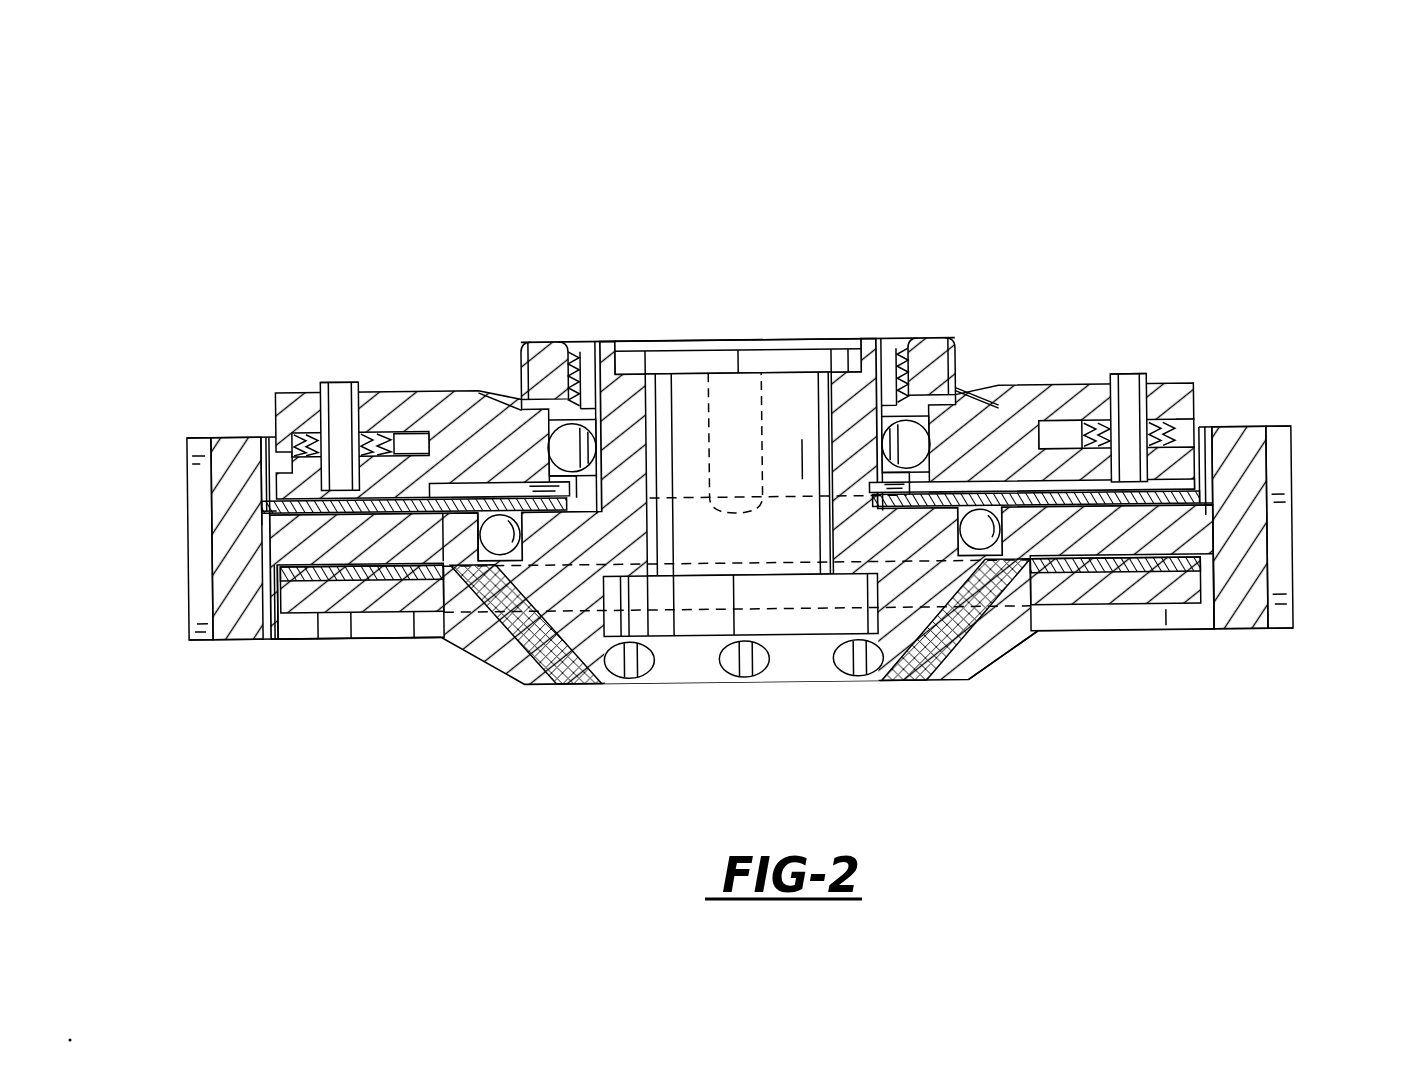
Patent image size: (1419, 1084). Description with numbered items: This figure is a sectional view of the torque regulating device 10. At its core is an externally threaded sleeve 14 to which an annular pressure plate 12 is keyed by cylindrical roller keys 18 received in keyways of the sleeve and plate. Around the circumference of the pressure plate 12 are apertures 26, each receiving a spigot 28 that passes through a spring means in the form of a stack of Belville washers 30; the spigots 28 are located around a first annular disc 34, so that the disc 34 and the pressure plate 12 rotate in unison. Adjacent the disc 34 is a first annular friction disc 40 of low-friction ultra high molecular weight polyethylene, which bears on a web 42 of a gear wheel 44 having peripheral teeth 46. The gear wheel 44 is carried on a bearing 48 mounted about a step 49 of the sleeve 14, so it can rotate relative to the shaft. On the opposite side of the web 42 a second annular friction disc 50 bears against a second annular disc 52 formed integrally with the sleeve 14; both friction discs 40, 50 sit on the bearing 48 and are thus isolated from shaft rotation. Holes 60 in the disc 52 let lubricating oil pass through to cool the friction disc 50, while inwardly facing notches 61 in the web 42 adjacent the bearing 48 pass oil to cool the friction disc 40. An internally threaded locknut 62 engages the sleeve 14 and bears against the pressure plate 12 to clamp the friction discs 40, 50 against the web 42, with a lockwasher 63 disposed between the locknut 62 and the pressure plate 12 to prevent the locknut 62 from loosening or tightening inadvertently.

The torque regulating device 10 is at (652, 268).
The annular pressure plate 12 is at (422, 398).
The externally threaded sleeve 14 is at (603, 391).
The cylindrical roller key 18 is at (531, 410).
The aperture 26 is at (352, 416).
The spigot 28 is at (338, 392).
The stack of Belville washers 30 is at (268, 424).
The first annular disc 34 is at (266, 505).
The first annular friction disc 40 is at (260, 501).
The web 42 is at (306, 634).
The gear wheel 44 is at (213, 634).
The peripheral teeth 46 is at (193, 507).
The bearing 48 is at (518, 680).
The step 49 is at (966, 684).
The second annular friction disc 50 is at (371, 594).
The second annular disc 52 is at (468, 565).
The holes 60 is at (623, 672).
The inwardly facing notches 61 is at (437, 548).
The internally threaded locknut 62 is at (931, 346).
The lockwasher 63 is at (973, 397).